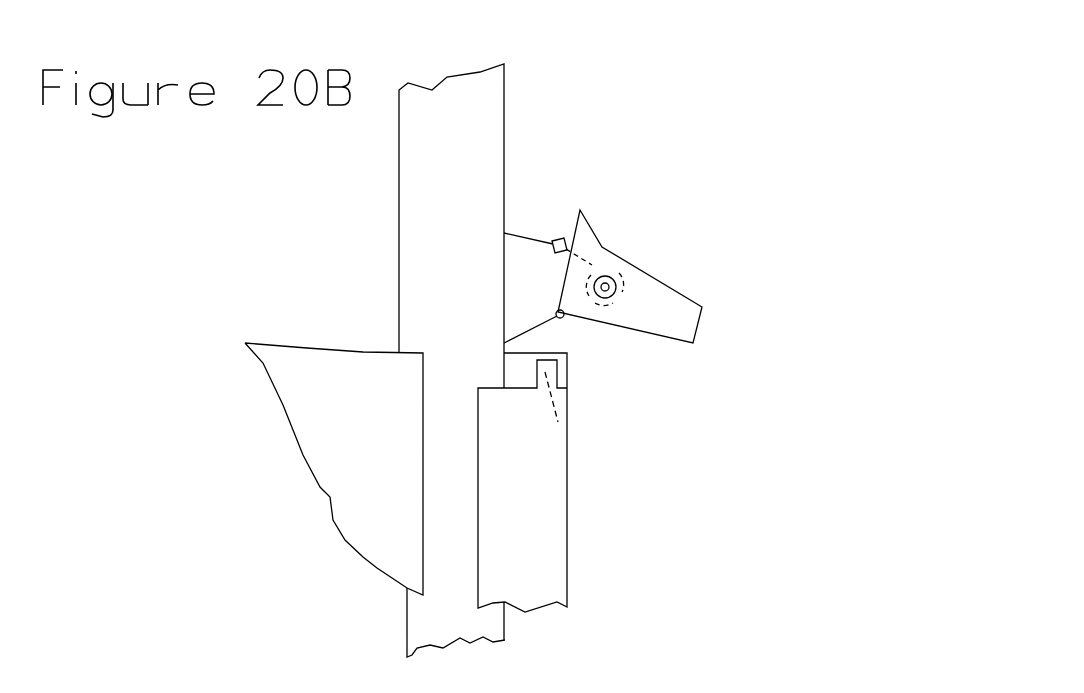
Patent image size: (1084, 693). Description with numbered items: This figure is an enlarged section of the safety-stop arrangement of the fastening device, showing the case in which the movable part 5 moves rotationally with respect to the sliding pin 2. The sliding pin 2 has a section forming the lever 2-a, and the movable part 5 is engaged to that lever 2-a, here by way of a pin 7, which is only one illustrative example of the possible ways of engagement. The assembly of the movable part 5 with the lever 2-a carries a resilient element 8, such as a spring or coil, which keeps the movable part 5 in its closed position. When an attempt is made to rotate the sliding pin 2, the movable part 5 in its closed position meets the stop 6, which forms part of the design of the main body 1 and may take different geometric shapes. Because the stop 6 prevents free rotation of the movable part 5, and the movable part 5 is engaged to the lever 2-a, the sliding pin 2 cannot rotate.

The main body 1 is at (82, 530).
The sliding pin 2 is at (675, 48).
The lever 2-a is at (822, 142).
The movable part 5 is at (803, 340).
The stop 6 is at (870, 532).
The pin 7 is at (853, 283).
The resilient element 8 is at (773, 243).